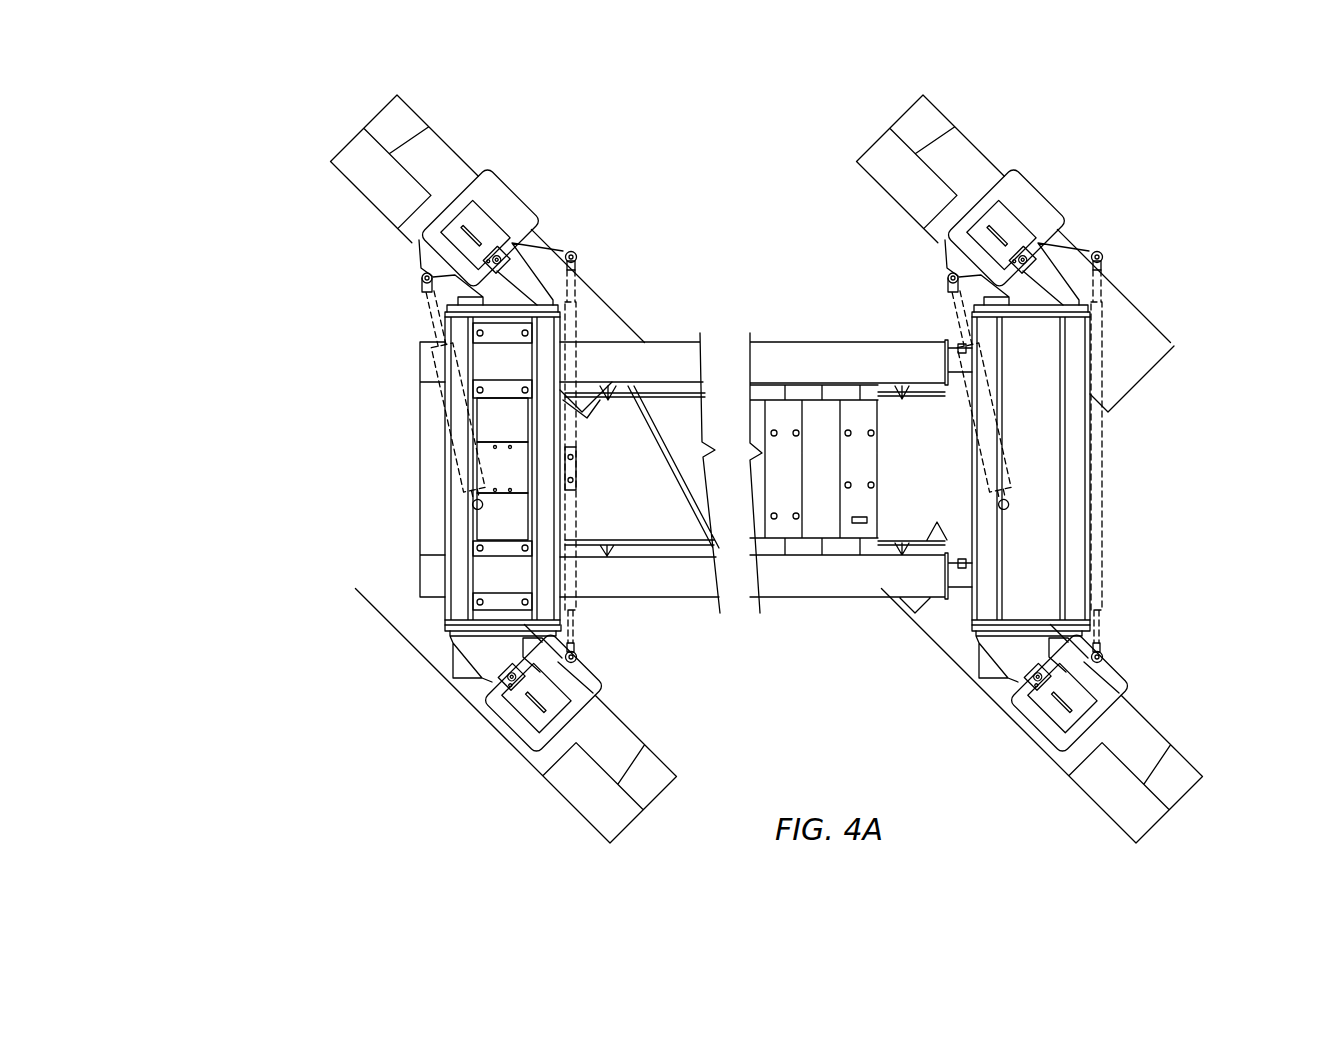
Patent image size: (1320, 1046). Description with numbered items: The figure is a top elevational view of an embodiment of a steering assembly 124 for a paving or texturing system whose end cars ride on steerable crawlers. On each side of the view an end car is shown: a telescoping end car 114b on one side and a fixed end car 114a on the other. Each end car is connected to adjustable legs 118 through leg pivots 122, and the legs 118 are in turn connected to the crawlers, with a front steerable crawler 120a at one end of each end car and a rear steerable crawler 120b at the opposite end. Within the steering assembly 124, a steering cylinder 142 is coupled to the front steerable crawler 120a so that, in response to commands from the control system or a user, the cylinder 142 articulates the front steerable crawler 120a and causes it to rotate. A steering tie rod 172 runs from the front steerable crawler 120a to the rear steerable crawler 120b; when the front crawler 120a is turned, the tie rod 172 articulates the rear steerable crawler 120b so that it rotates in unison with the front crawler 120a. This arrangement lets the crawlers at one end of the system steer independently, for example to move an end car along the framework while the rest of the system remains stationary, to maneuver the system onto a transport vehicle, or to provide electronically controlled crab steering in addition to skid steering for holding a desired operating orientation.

The steering assembly 124 is at (296, 203).
The adjustable leg 118 is at (525, 217).
The leg pivot 122 is at (513, 242).
The steering tie rod 172 is at (565, 368).
The steering cylinder 142 is at (450, 420).
The front steerable crawler 120a is at (369, 167).
The rear steerable crawler 120b is at (563, 770).
The fixed end car 114a is at (1082, 523).
The telescoping end car 114b is at (452, 605).